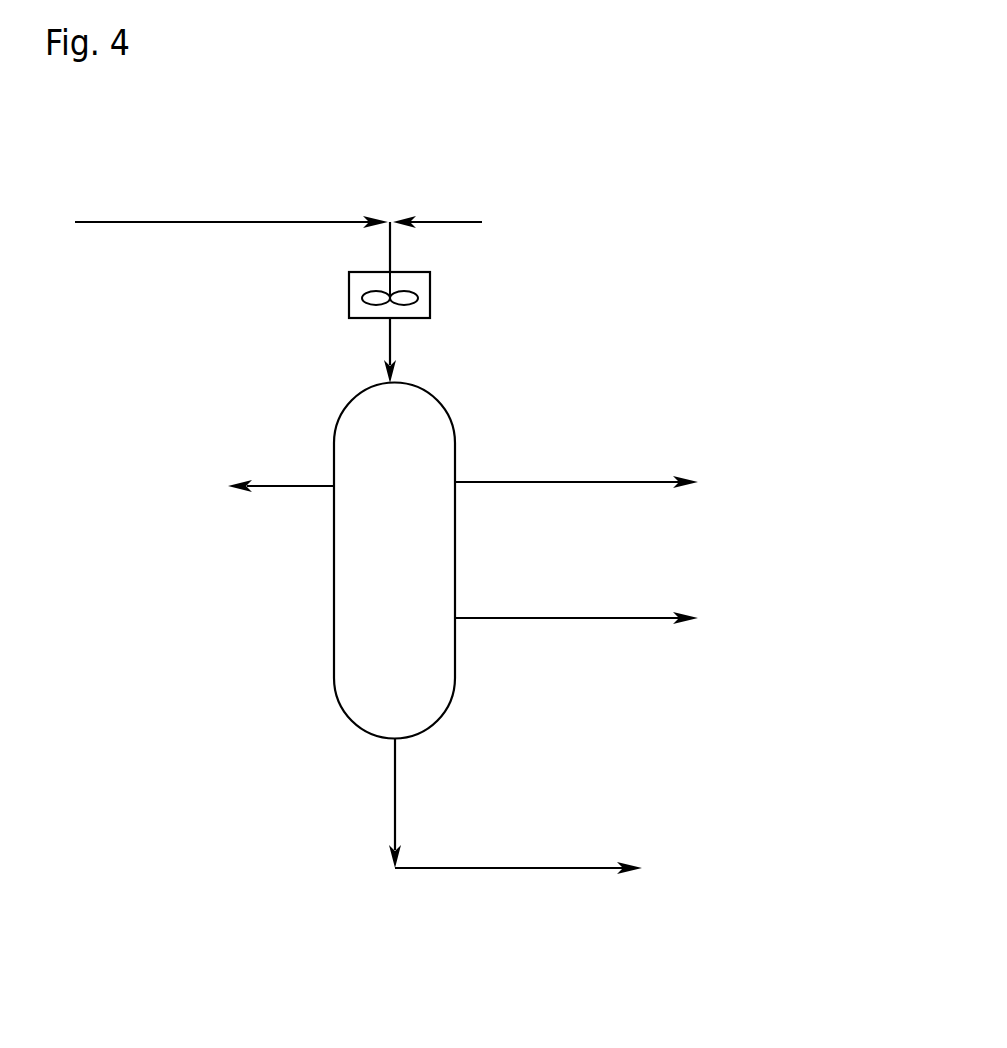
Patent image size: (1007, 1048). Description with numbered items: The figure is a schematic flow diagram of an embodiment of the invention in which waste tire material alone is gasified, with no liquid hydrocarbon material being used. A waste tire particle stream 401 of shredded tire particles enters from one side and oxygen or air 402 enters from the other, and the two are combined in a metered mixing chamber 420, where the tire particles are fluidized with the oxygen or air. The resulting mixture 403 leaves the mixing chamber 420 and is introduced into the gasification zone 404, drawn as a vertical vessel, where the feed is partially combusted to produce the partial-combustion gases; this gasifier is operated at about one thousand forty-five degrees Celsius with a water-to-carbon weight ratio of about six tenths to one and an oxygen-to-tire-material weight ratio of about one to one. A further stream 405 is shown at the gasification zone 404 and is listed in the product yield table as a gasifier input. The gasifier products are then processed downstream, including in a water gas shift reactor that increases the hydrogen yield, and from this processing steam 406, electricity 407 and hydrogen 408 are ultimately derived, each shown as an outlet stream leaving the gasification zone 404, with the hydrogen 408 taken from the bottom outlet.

The waste tire particle stream 401 is at (208, 222).
The oxygen or air 402 is at (437, 222).
The metered mixing chamber 420 is at (431, 286).
The mixture 403 is at (390, 342).
The gasification zone 404 is at (375, 571).
The gasifier in stream 405 is at (299, 486).
The steam 406 is at (497, 482).
The electricity 407 is at (485, 618).
The hydrogen 408 is at (452, 868).